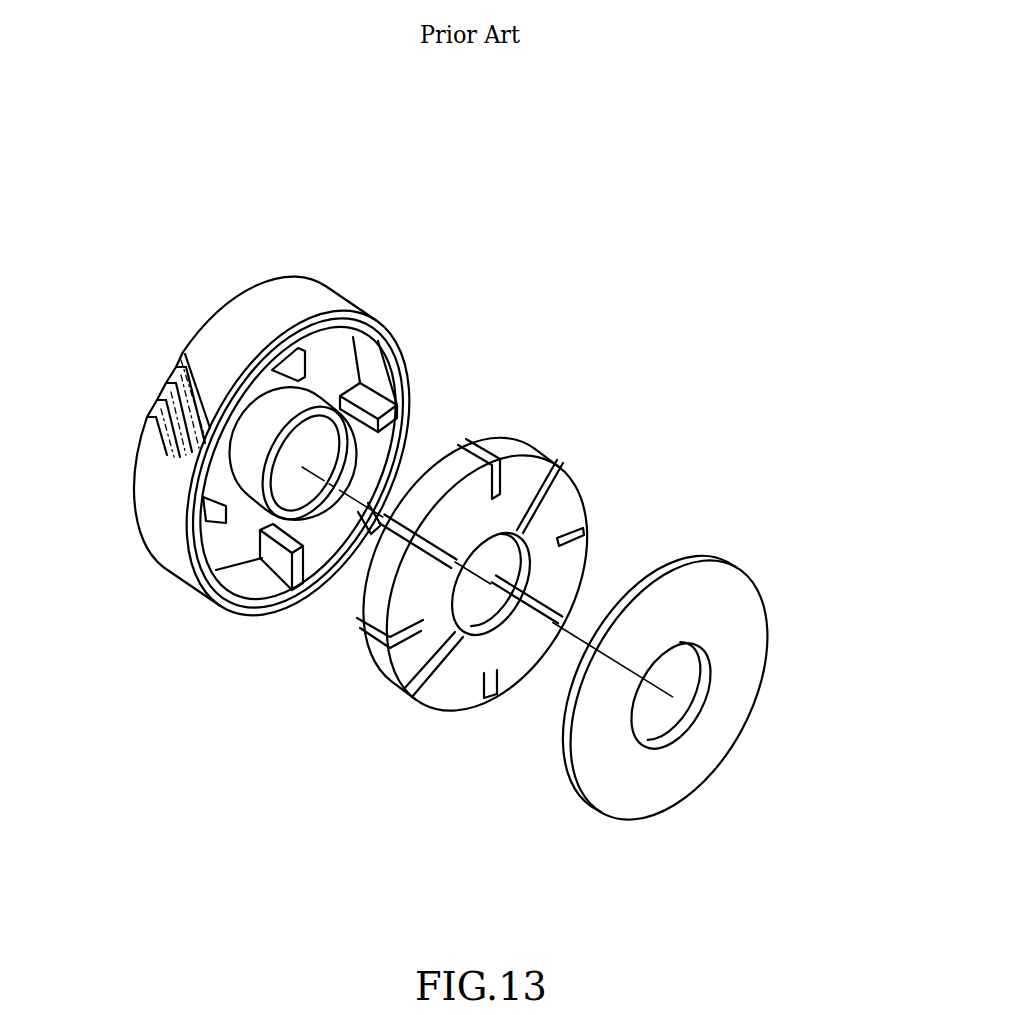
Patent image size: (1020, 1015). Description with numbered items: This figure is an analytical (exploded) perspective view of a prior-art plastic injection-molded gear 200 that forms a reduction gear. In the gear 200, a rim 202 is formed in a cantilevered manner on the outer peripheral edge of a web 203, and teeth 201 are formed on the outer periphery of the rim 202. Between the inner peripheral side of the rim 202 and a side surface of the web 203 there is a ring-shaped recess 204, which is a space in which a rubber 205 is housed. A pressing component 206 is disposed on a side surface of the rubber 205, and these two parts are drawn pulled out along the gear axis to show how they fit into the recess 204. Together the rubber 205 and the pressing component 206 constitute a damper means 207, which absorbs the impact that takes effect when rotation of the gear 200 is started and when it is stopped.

The plastic injection-molded gear 200 is at (398, 271).
The teeth 201 is at (173, 366).
The rim 202 is at (386, 330).
The web 203 is at (343, 372).
The ring-shaped recess 204 is at (224, 550).
The rubber 205 is at (571, 483).
The pressing component 206 is at (746, 588).
The damper means 207 is at (634, 632).